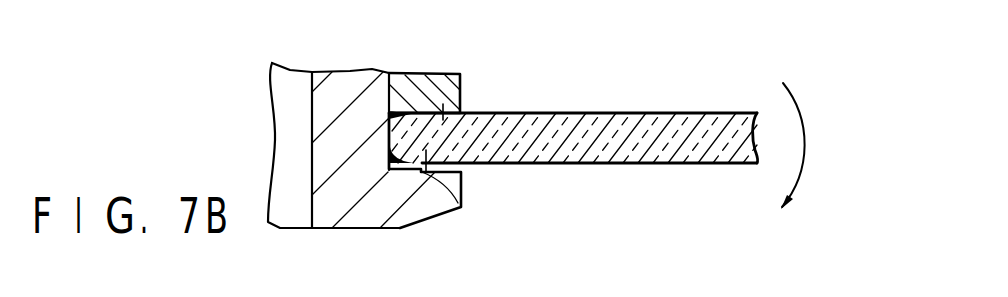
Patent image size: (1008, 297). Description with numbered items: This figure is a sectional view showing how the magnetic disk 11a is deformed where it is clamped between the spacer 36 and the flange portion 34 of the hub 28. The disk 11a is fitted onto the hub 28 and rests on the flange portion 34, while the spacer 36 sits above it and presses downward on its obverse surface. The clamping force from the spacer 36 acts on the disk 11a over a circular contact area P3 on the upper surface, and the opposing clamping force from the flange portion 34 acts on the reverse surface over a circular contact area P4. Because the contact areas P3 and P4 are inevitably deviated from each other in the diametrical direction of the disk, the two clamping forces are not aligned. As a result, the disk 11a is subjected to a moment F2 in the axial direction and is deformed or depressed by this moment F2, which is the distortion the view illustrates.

The hub 28 is at (338, 80).
The spacer 36 is at (437, 82).
The flange portion 34 is at (427, 209).
The magnetic disk 11a is at (678, 165).
The circular contact area P3 is at (463, 103).
The circular contact area P4 is at (461, 192).
The moment F2 is at (805, 146).